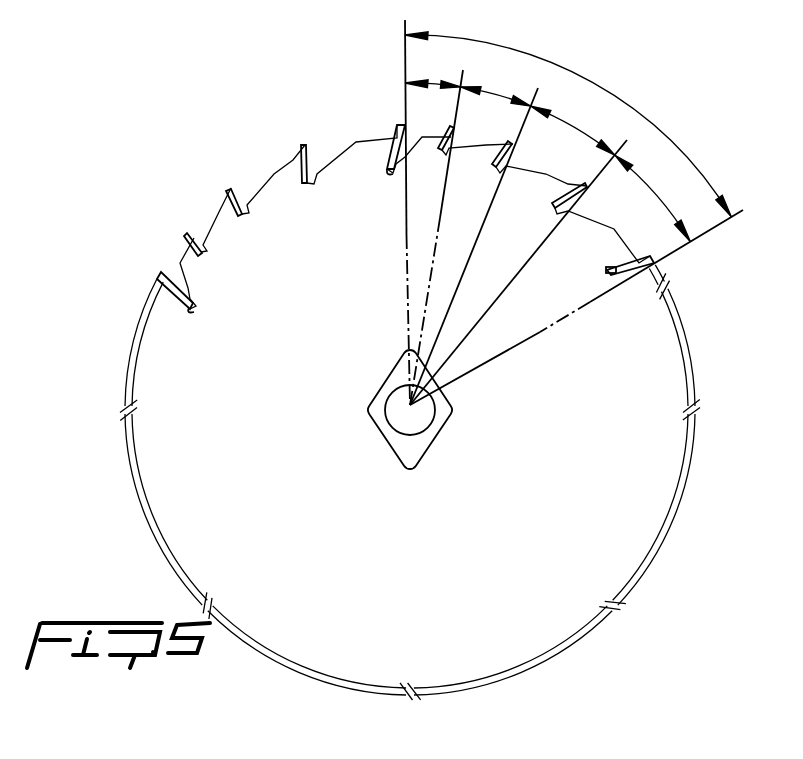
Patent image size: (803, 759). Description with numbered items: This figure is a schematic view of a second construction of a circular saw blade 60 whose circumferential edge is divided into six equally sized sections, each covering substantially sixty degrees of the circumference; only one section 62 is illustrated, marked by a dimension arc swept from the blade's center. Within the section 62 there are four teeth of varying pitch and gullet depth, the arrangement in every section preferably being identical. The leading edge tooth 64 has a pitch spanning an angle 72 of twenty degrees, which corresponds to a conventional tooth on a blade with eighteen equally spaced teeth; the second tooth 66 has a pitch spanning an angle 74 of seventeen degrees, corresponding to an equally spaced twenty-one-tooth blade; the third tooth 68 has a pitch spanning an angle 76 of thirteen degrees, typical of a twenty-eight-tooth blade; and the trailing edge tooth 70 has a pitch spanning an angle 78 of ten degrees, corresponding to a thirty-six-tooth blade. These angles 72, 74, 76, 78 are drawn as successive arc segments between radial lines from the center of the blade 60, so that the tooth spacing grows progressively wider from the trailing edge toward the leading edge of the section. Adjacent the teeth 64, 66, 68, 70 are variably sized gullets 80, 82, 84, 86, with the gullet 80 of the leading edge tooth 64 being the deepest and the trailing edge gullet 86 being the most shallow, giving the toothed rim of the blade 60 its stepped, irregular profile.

The blade 60 is at (640, 460).
The section 62 is at (598, 82).
The leading edge tooth 64 is at (375, 137).
The second tooth 66 is at (287, 172).
The third tooth 68 is at (225, 212).
The trailing edge tooth 70 is at (185, 258).
The angle 72 is at (657, 190).
The angle 74 is at (574, 124).
The angle 76 is at (497, 88).
The angle 78 is at (432, 78).
The gullet 80 is at (197, 303).
The gullet 82 is at (312, 182).
The gullet 84 is at (244, 214).
The trailing edge gullet 86 is at (203, 252).